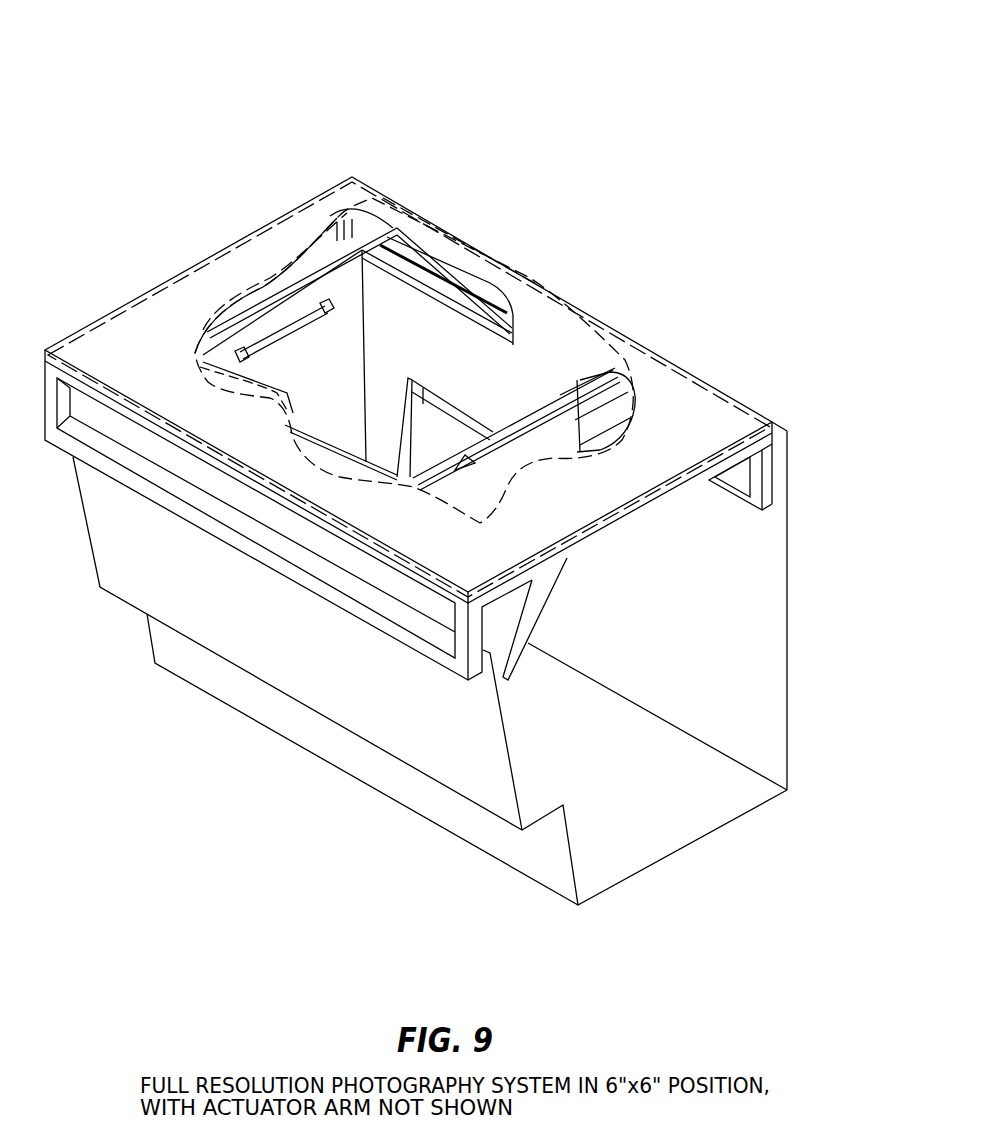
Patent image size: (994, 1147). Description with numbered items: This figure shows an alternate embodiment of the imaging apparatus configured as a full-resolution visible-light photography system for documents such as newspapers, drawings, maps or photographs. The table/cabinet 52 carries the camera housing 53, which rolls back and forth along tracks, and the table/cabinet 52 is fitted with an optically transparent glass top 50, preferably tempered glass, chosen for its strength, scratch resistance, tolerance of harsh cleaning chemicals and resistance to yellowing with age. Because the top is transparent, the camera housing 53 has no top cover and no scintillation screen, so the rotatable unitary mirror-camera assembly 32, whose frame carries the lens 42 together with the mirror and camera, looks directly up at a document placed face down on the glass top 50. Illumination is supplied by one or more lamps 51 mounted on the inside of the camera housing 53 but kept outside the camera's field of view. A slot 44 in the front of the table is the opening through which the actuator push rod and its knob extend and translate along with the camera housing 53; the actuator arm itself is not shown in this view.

The glass top 50 is at (407, 324).
The lamp 51 is at (381, 186).
The unitary mirror-camera assembly 32 is at (538, 351).
The lens 42 is at (605, 380).
The camera housing 53 is at (702, 378).
The table/cabinet 52 is at (414, 627).
The slot 44 is at (248, 651).